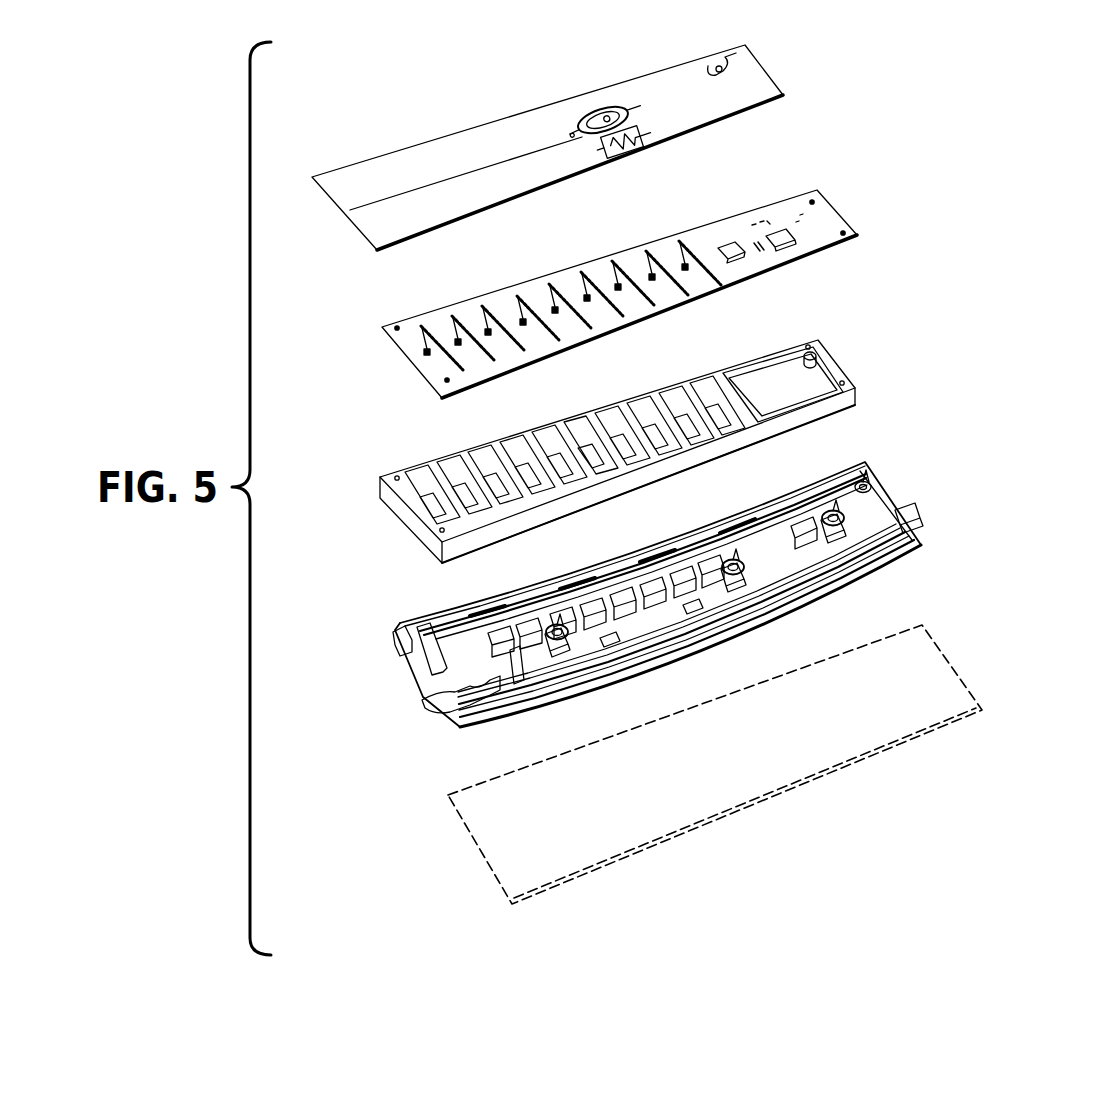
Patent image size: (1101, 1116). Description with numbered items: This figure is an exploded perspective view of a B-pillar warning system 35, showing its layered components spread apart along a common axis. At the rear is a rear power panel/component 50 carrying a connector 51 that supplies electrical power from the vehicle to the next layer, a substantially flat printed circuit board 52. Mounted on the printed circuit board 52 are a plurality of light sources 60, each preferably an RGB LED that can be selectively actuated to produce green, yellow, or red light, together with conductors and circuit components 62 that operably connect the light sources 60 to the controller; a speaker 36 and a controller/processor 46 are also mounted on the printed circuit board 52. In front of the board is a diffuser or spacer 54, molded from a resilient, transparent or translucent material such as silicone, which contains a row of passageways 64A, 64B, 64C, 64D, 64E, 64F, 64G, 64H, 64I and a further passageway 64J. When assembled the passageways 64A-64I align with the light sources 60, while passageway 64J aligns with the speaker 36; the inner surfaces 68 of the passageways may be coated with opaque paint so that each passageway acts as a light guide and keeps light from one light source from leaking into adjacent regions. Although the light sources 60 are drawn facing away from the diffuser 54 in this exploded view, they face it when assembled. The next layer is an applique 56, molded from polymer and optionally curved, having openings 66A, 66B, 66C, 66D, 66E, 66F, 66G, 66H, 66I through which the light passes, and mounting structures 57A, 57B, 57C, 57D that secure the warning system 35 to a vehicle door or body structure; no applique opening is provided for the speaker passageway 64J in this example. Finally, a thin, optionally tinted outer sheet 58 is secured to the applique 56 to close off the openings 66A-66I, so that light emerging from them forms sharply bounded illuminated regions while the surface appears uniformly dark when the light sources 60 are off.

The B-pillar warning system 35 is at (1014, 226).
The speaker 36 is at (730, 246).
The controller/processor 46 is at (788, 243).
The rear power panel/component 50 is at (778, 67).
The connector 51 is at (598, 114).
The printed circuit board 52 is at (850, 211).
The diffuser or spacer 54 is at (853, 365).
The applique 56 is at (924, 526).
The mounting structure 57A is at (868, 483).
The mounting structure 57B is at (922, 543).
The mounting structure 57C is at (750, 573).
The mounting structure 57D is at (398, 628).
The outer sheet 58 is at (976, 728).
The light sources 60 is at (488, 329).
The conductors and circuit components 62 is at (525, 350).
The passageway 64A is at (432, 522).
The passageway 64B is at (464, 512).
The passageway 64C is at (495, 502).
The passageway 64D is at (527, 492).
The passageway 64E is at (559, 482).
The passageway 64F is at (590, 473).
The passageway 64G is at (622, 463).
The passageway 64H is at (654, 453).
The passageway 64I is at (686, 443).
The speaker passageway 64J is at (717, 432).
The opening 66A is at (494, 658).
The opening 66B is at (522, 650).
The opening 66C is at (556, 640).
The opening 66D is at (586, 631).
The opening 66E is at (616, 621).
The opening 66F is at (646, 610).
The opening 66G is at (676, 599).
The opening 66H is at (704, 589).
The opening 66I is at (808, 553).
The inner surfaces 68 is at (465, 480).